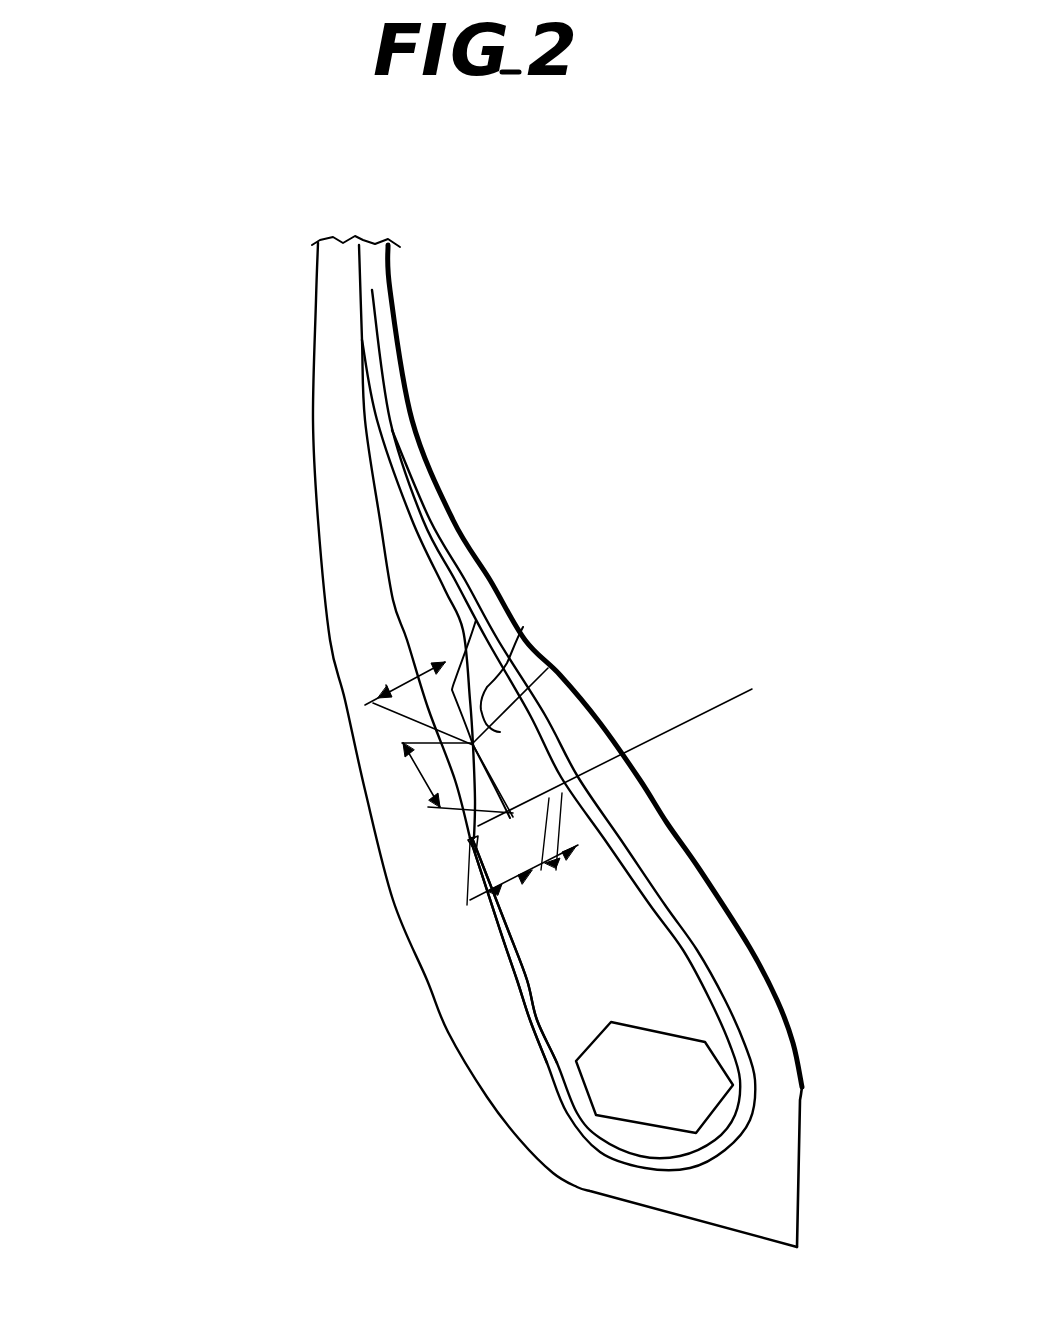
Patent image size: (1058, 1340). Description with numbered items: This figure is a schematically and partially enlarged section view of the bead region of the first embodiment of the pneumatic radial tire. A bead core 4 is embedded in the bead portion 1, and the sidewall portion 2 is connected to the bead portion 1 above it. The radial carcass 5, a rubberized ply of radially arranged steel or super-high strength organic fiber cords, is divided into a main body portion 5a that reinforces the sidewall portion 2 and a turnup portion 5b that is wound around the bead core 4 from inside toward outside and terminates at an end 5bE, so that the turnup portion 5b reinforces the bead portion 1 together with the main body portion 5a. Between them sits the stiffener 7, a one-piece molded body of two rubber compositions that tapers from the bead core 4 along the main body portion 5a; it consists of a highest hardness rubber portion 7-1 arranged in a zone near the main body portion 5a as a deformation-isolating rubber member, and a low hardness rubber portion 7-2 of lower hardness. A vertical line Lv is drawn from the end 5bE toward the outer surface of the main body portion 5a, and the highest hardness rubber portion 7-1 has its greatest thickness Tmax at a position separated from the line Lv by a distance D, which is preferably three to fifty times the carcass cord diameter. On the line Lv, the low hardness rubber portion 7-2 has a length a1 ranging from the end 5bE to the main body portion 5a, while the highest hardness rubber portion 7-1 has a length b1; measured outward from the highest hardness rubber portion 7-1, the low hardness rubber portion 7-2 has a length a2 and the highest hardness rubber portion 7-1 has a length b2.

The bead portion 1 is at (448, 1032).
The sidewall portion 2 is at (314, 403).
The bead core 4 is at (655, 1105).
The radial carcass 5 is at (415, 486).
The main body portion 5a is at (458, 577).
The turnup portion 5b is at (500, 932).
The end of the turnup portion 5bE is at (470, 838).
The stiffener 7 is at (667, 1003).
The highest hardness rubber portion 7-1 is at (522, 743).
The low hardness rubber portion 7-2 is at (630, 920).
The greatest thickness Tmax is at (523, 627).
The vertical line Lv is at (725, 700).
The distance D is at (403, 745).
The length of the low hardness rubber portion a1 is at (515, 893).
The length of the highest hardness rubber portion b1 is at (558, 872).
The length of the low hardness rubber portion a2 is at (382, 694).
The length of the highest hardness rubber portion b2 is at (420, 683).